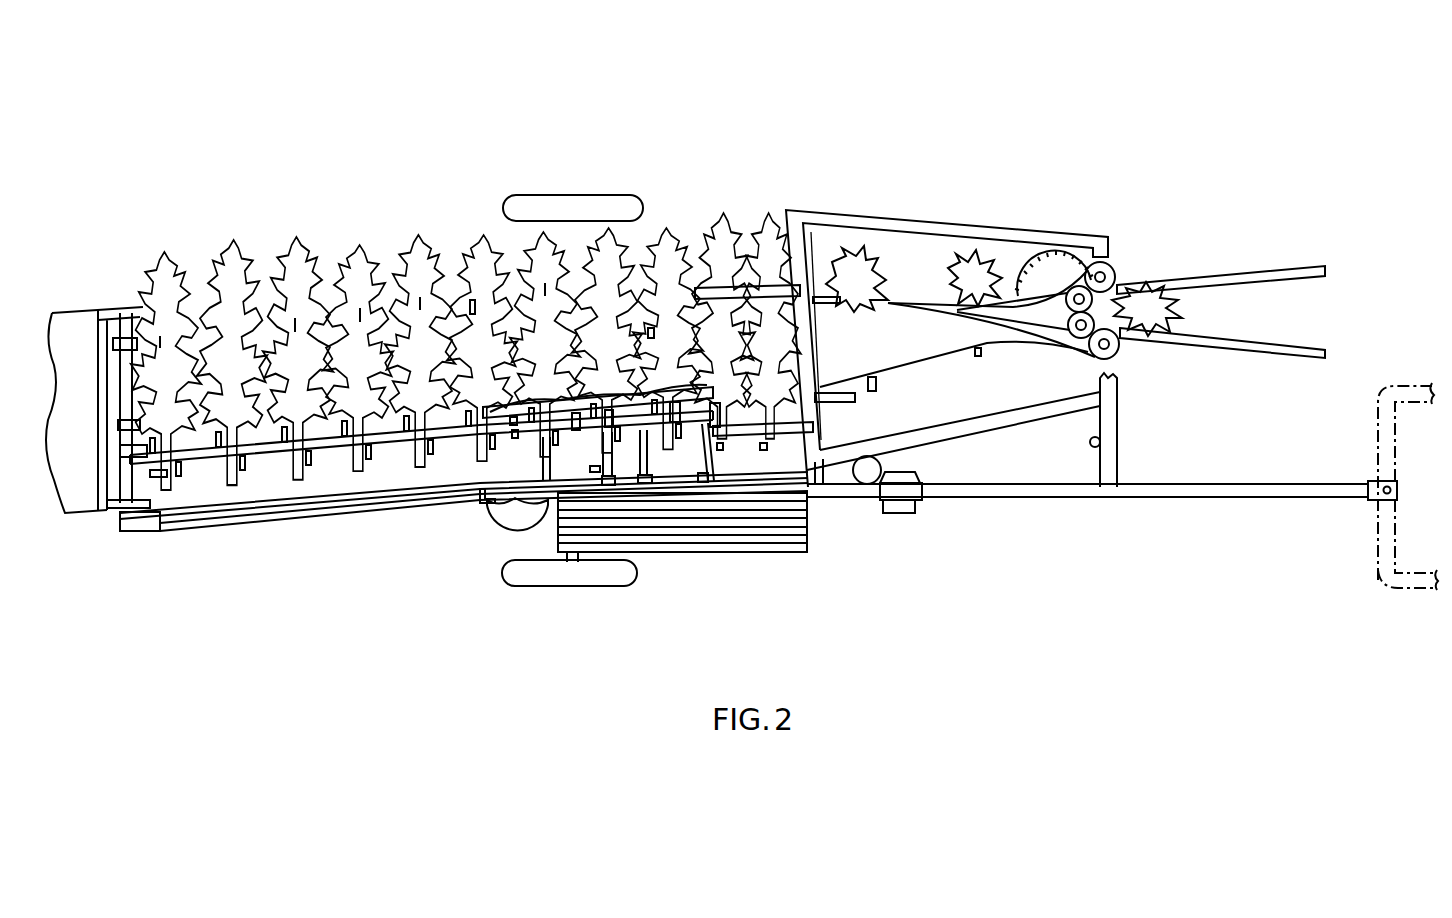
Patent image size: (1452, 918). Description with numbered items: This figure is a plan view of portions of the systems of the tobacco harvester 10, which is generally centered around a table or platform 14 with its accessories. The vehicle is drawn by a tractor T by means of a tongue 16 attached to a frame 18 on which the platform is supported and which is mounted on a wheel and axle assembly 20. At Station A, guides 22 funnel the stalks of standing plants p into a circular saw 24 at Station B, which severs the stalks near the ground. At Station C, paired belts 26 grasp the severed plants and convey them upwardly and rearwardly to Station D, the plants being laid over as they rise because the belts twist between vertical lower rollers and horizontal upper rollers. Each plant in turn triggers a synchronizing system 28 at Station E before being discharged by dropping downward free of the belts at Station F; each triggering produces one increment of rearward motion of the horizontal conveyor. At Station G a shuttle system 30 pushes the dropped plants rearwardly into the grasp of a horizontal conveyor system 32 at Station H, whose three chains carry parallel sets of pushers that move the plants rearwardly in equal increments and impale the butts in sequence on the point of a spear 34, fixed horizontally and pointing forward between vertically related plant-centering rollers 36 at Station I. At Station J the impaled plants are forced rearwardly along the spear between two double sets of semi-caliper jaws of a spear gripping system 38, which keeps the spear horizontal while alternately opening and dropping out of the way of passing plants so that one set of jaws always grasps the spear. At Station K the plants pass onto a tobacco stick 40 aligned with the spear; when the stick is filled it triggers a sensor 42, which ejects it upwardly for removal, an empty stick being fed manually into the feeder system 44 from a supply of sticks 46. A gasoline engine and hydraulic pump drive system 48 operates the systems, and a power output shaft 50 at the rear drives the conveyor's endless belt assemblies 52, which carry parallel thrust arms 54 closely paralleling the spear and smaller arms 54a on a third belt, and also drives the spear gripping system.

The tobacco harvester 10 is at (785, 103).
The table or platform 14 is at (255, 298).
The tongue 16 is at (1230, 498).
The frame 18 is at (834, 474).
The wheel and axle assembly 20 is at (627, 588).
The guides 22 is at (1251, 354).
The circular saw 24 is at (1038, 262).
The paired belts 26 is at (957, 328).
The synchronizing system 28 is at (845, 402).
The shuttle system 30 is at (789, 405).
The horizontal conveyor system 32 is at (655, 366).
The spear 34 is at (657, 423).
The plant-centering rollers 36 is at (744, 420).
The spear gripping system 38 is at (596, 470).
The tobacco stick 40 is at (495, 440).
The sensor 42 is at (153, 475).
The feeder system 44 is at (484, 497).
The supply of sticks 46 is at (726, 555).
The gasoline engine and hydraulic pump drive system 48 is at (907, 512).
The power output shaft 50 is at (123, 387).
The endless belt assemblies 52 is at (122, 425).
The thrust arms 54 is at (430, 455).
The smaller arms 54a is at (480, 307).
The Station A is at (1153, 284).
The Station B is at (1078, 287).
The Station C is at (1062, 280).
The Station D is at (963, 280).
The Station E is at (850, 388).
The Station F is at (788, 335).
The Station G is at (753, 318).
The Station H is at (725, 292).
The Station I is at (707, 420).
The Station J is at (583, 410).
The Station K is at (494, 412).
The standing plants p is at (1196, 322).
The tractor T is at (1418, 385).